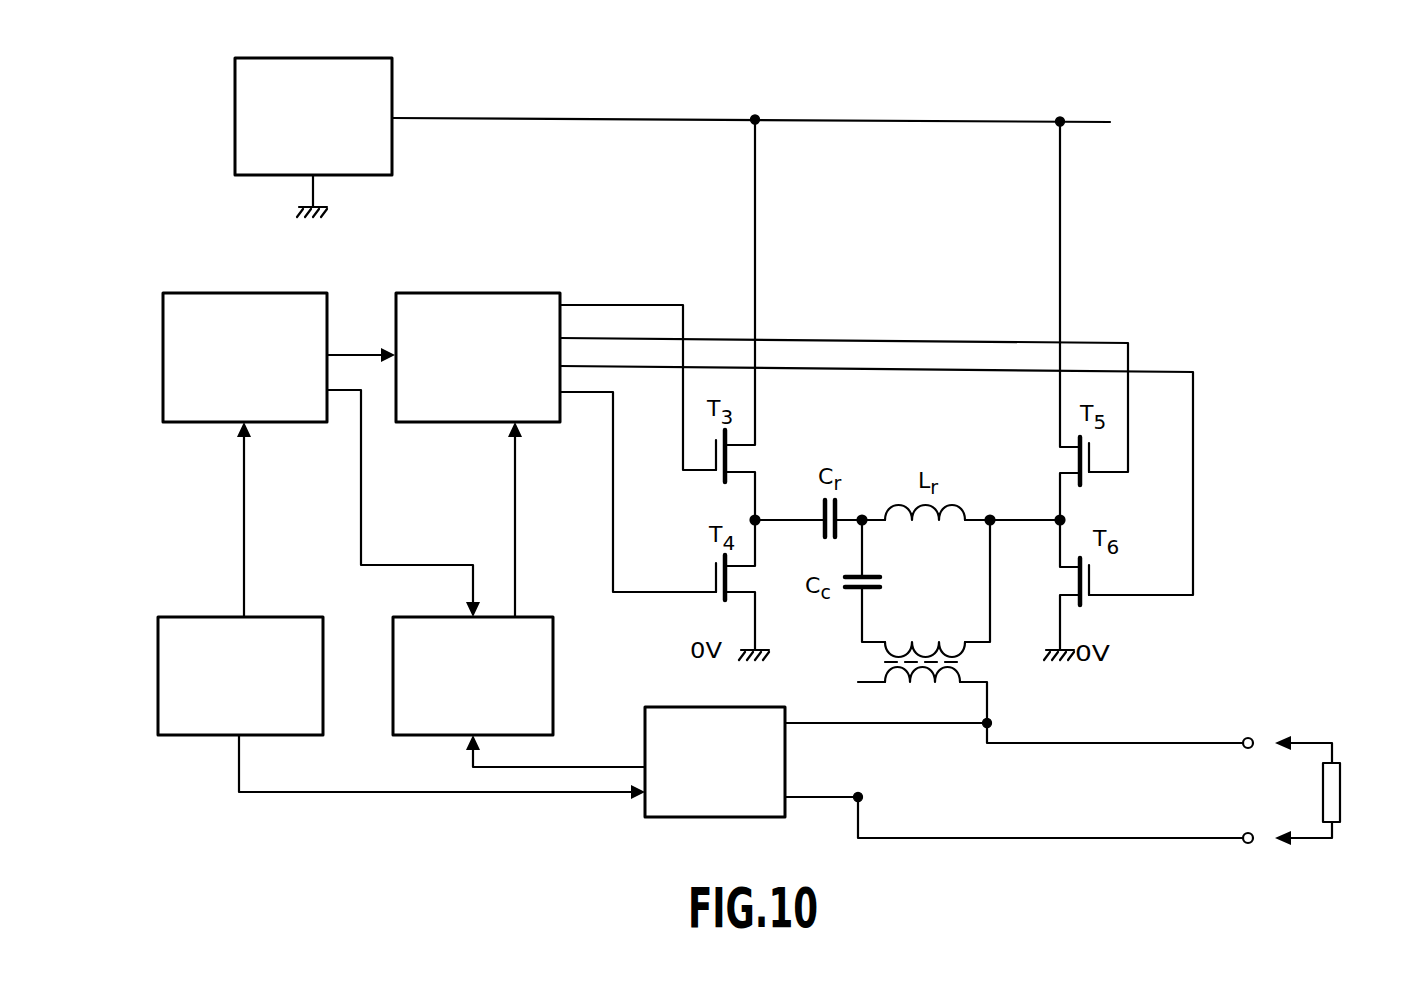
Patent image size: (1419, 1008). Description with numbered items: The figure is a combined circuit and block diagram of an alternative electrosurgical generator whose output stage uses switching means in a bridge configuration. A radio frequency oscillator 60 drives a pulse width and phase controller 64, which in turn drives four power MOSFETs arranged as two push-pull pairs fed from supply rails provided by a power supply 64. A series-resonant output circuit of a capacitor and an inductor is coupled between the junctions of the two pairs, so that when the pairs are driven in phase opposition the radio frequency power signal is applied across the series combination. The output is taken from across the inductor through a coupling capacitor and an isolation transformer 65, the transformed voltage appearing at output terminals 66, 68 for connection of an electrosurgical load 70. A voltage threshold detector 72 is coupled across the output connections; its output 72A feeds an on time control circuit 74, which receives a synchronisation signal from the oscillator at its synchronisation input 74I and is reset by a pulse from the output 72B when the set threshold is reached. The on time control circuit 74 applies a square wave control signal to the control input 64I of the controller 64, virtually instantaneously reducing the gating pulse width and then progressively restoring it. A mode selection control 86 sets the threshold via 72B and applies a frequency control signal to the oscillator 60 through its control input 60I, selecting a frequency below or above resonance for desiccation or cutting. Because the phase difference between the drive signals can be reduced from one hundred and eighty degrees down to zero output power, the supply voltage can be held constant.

The radio frequency oscillator 60 is at (163, 318).
The pulse width and phase controller 64 is at (392, 85).
The control input 60I is at (244, 473).
The control input 64I is at (515, 472).
The synchronisation input 74I is at (466, 565).
The mode selection control 86 is at (186, 617).
The on time control circuit 74 is at (553, 660).
The output 72A is at (612, 767).
The output 72B is at (599, 792).
The voltage threshold detector 72 is at (690, 817).
The isolation transformer 65 is at (860, 660).
The output terminal 66 is at (1248, 738).
The output terminal 68 is at (1248, 843).
The electrosurgical load 70 is at (1332, 777).